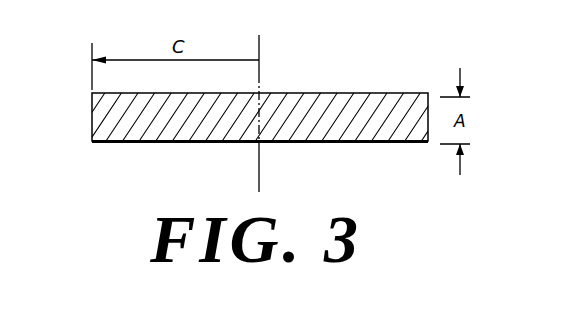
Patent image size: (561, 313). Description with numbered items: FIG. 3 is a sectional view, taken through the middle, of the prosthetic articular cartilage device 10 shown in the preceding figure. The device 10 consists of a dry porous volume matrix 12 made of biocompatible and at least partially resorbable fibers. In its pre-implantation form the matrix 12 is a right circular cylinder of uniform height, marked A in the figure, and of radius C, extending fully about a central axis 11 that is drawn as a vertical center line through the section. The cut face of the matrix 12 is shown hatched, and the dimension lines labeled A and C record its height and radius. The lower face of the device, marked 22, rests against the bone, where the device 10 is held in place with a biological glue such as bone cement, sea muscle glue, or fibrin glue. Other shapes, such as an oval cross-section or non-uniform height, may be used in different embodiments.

The prosthetic articular cartilage device 10 is at (98, 36).
The central axis 11 is at (259, 43).
The dry porous volume matrix 12 is at (180, 118).
The bottom coating layer 22 is at (322, 145).